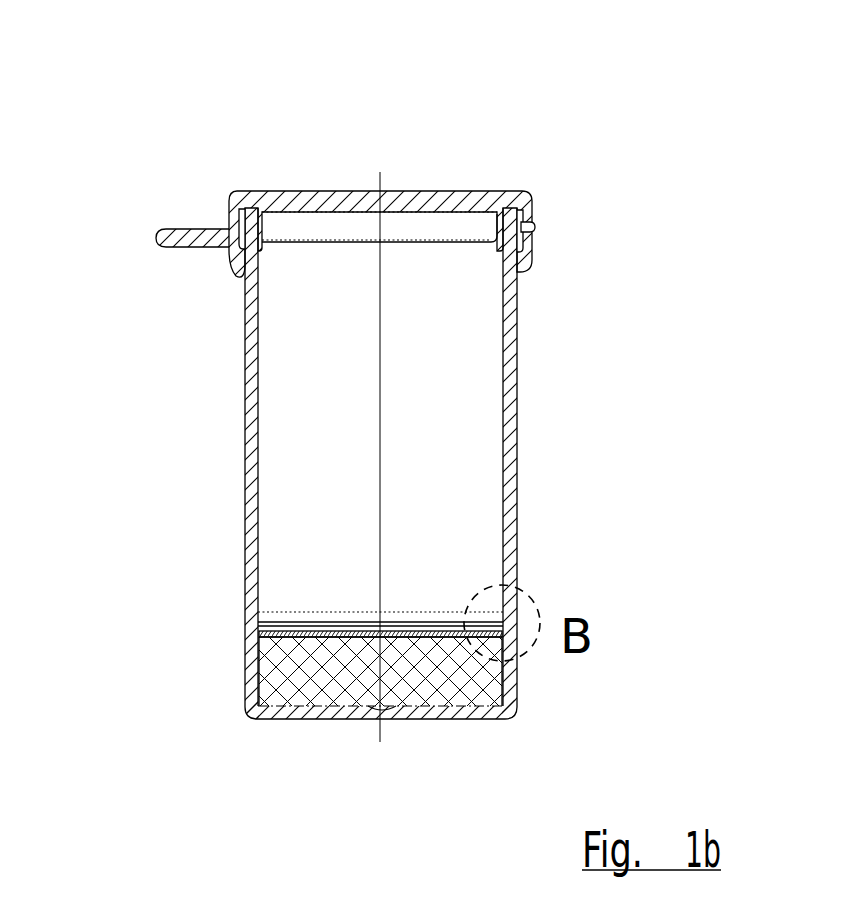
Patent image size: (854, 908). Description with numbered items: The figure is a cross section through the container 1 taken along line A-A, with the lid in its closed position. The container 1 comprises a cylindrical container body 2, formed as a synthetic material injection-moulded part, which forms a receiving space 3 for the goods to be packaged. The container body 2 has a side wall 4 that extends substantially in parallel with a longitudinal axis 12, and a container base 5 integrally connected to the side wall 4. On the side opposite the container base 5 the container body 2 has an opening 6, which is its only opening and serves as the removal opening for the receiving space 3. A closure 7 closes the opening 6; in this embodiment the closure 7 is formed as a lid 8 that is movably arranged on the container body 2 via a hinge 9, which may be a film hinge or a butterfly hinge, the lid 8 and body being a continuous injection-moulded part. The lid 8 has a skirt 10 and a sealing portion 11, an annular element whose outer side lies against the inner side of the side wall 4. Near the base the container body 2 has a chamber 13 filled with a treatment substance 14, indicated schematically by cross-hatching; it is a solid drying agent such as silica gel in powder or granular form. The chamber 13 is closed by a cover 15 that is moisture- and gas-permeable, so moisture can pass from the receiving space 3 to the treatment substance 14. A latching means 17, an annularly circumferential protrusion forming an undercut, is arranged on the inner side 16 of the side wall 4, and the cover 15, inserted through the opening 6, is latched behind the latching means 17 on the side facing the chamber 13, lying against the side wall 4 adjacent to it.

The container 1 is at (187, 678).
The container body 2 is at (510, 423).
The receiving space 3 is at (473, 462).
The side wall 4 is at (515, 352).
The container base 5 is at (447, 712).
The opening 6 is at (423, 222).
The closure 7 is at (263, 138).
The lid 8 is at (467, 198).
The hinge 9 is at (537, 225).
The skirt 10 is at (235, 228).
The sealing portion 11 is at (265, 222).
The longitudinal axis 12 is at (382, 177).
The chamber 13 is at (310, 688).
The treatment substance 14 is at (356, 700).
The cover 15 is at (460, 630).
The inner side 16 is at (500, 490).
The latching means 17 is at (257, 615).